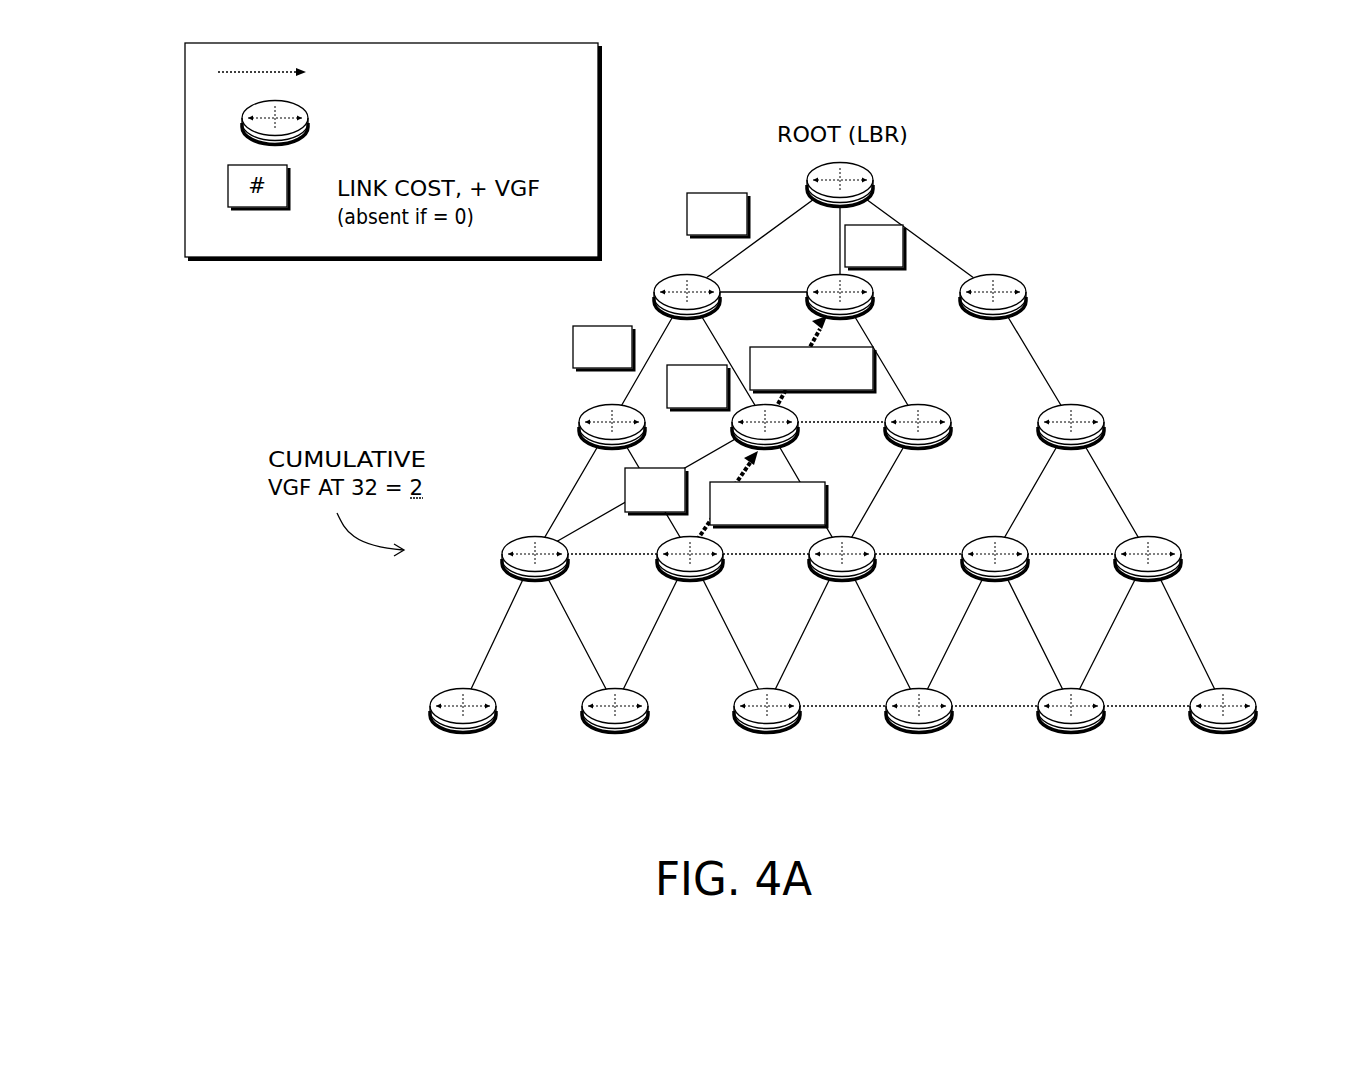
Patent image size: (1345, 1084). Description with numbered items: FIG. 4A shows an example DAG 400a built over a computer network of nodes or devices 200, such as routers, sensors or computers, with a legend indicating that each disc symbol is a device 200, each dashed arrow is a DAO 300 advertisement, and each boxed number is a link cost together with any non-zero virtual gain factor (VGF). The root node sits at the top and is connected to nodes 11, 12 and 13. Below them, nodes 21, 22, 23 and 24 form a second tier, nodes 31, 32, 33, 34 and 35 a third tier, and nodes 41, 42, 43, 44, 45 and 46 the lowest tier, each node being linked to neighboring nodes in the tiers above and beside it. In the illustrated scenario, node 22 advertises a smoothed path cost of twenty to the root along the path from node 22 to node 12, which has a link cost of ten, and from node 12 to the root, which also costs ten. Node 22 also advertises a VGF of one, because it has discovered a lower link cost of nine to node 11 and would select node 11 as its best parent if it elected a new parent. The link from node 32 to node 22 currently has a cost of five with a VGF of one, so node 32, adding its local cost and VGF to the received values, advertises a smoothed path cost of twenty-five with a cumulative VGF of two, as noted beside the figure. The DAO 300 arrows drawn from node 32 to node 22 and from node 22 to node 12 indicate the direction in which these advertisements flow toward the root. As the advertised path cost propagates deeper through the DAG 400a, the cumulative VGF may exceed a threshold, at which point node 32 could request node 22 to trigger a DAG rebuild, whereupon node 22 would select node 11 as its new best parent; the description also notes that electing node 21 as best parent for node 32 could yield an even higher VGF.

The DAO message 300 is at (324, 70).
The nodes/devices 200 is at (354, 123).
The network topology 400a is at (1240, 86).
The node 11 is at (687, 313).
The node 12 is at (840, 313).
The node 13 is at (993, 313).
The node 21 is at (612, 445).
The node 22 is at (765, 445).
The node 23 is at (918, 445).
The node 24 is at (1071, 445).
The node 31 is at (535, 578).
The node 32 is at (690, 578).
The node 33 is at (842, 578).
The node 34 is at (995, 578).
The node 35 is at (1148, 578).
The node 41 is at (463, 728).
The node 42 is at (615, 728).
The node 43 is at (767, 728).
The node 44 is at (919, 728).
The node 45 is at (1071, 728).
The node 46 is at (1223, 728).